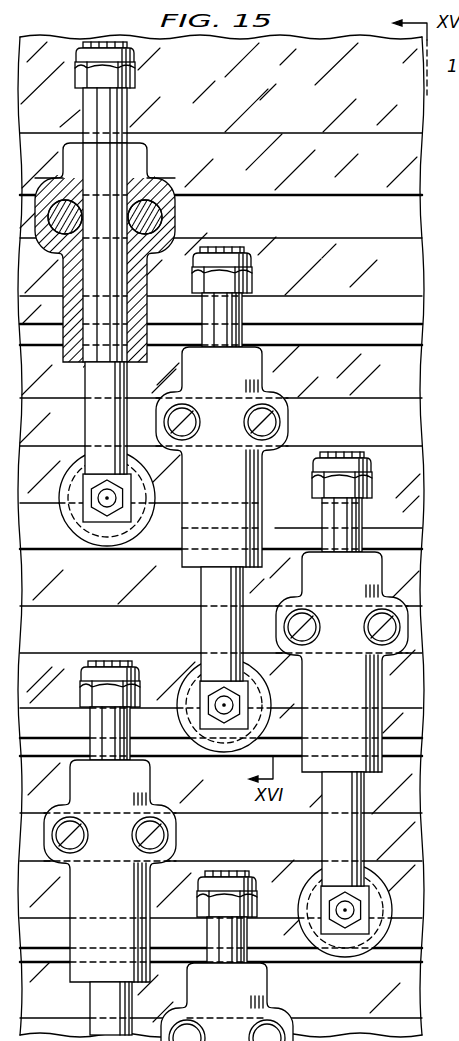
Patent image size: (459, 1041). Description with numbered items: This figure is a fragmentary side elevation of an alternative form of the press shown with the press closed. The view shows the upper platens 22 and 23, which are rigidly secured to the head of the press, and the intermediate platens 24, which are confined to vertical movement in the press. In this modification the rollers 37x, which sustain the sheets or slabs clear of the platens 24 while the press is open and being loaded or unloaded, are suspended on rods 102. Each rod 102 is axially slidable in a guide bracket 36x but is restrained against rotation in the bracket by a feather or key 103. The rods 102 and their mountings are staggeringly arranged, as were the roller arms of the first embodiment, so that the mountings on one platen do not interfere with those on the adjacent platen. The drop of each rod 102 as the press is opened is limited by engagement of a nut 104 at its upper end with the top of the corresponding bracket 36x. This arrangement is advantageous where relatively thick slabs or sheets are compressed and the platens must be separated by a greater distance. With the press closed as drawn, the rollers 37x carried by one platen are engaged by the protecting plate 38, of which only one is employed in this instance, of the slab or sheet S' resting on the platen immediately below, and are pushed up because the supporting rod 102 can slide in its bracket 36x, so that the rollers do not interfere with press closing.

The platen 22 is at (290, 84).
The platen 23 is at (309, 218).
The intermediate platen 24 is at (297, 452).
The protecting plate 38 is at (359, 334).
The rod 102 is at (96, 421).
The feather or key 103 is at (104, 158).
The nut 104 is at (134, 65).
The guide bracket 36x is at (193, 275).
The roller 37x is at (112, 549).
The sheet or slab S' is at (346, 599).